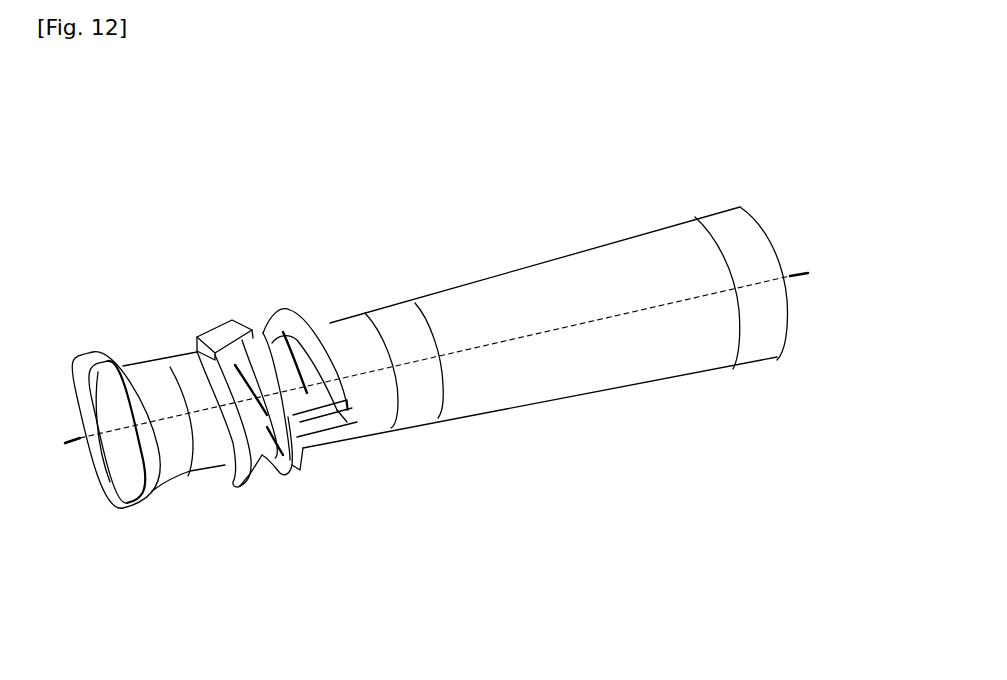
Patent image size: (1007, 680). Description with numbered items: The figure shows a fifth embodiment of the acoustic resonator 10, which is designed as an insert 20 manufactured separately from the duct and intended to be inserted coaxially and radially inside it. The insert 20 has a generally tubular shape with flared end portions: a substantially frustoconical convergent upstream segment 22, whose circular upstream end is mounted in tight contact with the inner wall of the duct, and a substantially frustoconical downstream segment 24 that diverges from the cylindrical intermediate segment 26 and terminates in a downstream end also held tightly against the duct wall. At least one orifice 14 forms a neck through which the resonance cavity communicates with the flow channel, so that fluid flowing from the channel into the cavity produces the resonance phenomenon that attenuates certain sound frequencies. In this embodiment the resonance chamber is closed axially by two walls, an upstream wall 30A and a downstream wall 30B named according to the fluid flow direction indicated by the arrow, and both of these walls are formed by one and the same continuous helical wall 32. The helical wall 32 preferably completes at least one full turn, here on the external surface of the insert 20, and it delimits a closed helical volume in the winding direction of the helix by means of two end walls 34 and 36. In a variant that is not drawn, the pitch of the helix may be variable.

The resonator 10 is at (382, 297).
The orifice 14 is at (297, 320).
The insert 20 is at (602, 397).
The upstream segment 22 is at (126, 368).
The downstream segment 24 is at (733, 237).
The intermediate segment 26 is at (342, 437).
The upstream wall 30A is at (236, 486).
The downstream wall 30B is at (337, 340).
The helical wall 32 is at (285, 478).
The end wall 34 is at (230, 340).
The end wall 36 is at (315, 417).